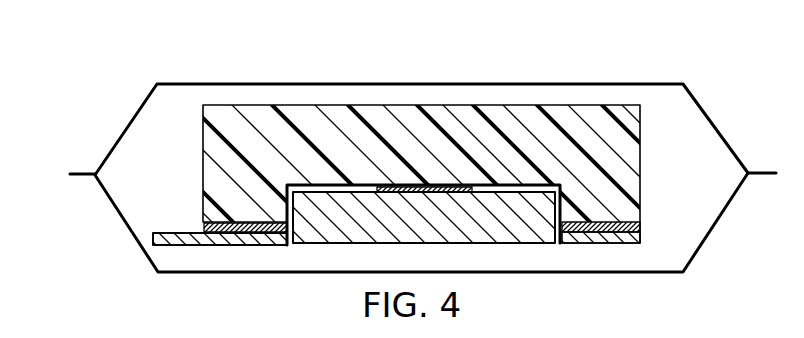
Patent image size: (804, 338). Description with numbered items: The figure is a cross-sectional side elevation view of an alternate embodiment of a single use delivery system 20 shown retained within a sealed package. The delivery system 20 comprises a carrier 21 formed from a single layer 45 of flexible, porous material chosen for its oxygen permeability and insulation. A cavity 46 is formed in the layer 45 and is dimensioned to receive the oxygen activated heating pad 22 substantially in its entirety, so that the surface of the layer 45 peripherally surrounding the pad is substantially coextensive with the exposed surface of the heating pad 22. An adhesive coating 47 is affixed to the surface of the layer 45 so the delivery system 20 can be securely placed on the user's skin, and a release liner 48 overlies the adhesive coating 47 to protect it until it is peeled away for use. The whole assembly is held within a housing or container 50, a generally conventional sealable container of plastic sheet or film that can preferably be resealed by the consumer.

The delivery system 20 is at (196, 129).
The carrier 21 is at (650, 168).
The heating pad 22 is at (508, 237).
The layer 45 is at (300, 118).
The cavity 46 is at (295, 222).
The adhesive coating 47 is at (640, 227).
The release liner 48 is at (610, 243).
The container 50 is at (127, 225).